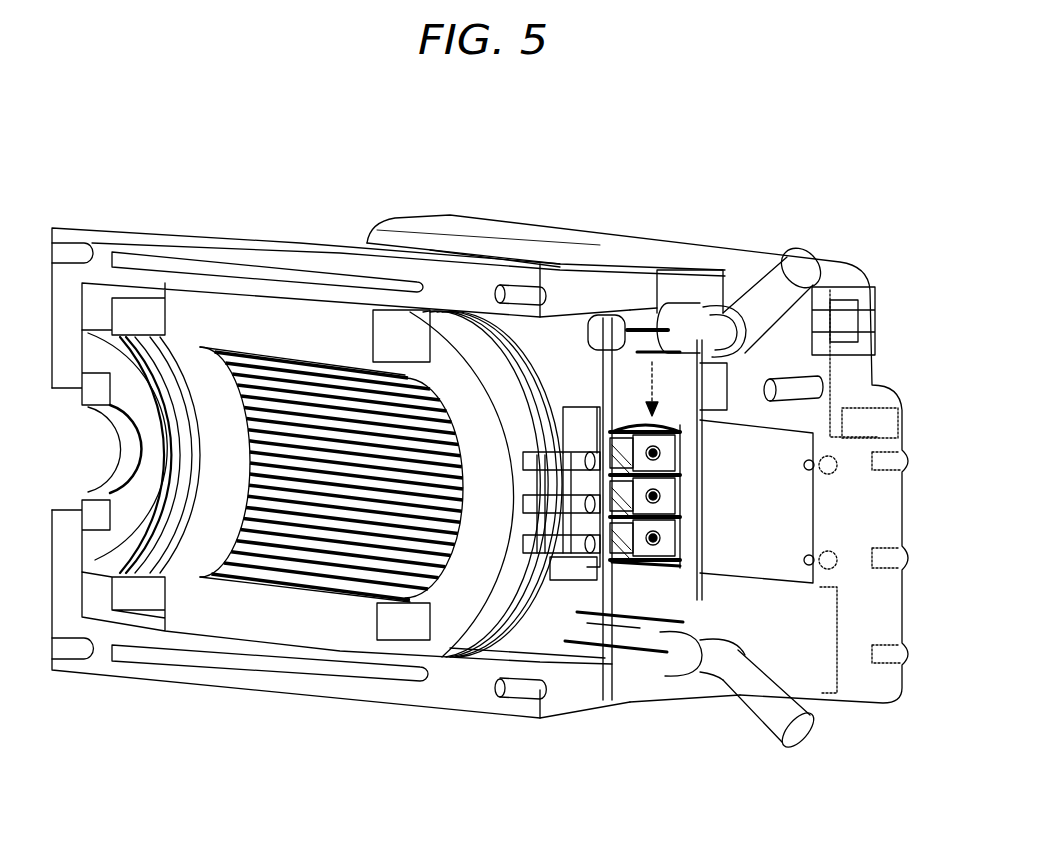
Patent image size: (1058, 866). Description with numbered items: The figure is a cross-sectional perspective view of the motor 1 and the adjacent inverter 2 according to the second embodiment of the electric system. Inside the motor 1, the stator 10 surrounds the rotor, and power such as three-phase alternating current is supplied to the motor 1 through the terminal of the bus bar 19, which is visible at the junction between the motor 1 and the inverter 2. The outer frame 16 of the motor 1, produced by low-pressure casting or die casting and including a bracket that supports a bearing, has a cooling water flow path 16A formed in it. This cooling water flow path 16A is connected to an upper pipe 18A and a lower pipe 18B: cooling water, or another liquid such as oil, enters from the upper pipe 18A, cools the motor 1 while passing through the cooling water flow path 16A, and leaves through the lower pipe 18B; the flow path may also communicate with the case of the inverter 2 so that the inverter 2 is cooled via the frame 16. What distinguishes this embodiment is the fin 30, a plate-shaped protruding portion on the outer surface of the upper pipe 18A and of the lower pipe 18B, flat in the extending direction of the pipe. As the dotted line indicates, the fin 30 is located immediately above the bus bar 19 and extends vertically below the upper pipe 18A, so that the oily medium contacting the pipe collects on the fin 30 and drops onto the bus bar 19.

The motor 1 is at (103, 228).
The stator 10 is at (185, 300).
The frame 16 is at (237, 253).
The cooling water flow path 16A is at (272, 270).
The inverter 2 is at (541, 224).
The fin 30 is at (655, 308).
The bus bar 19 is at (685, 410).
The upper pipe 18A is at (797, 262).
The lower pipe 18B is at (791, 750).